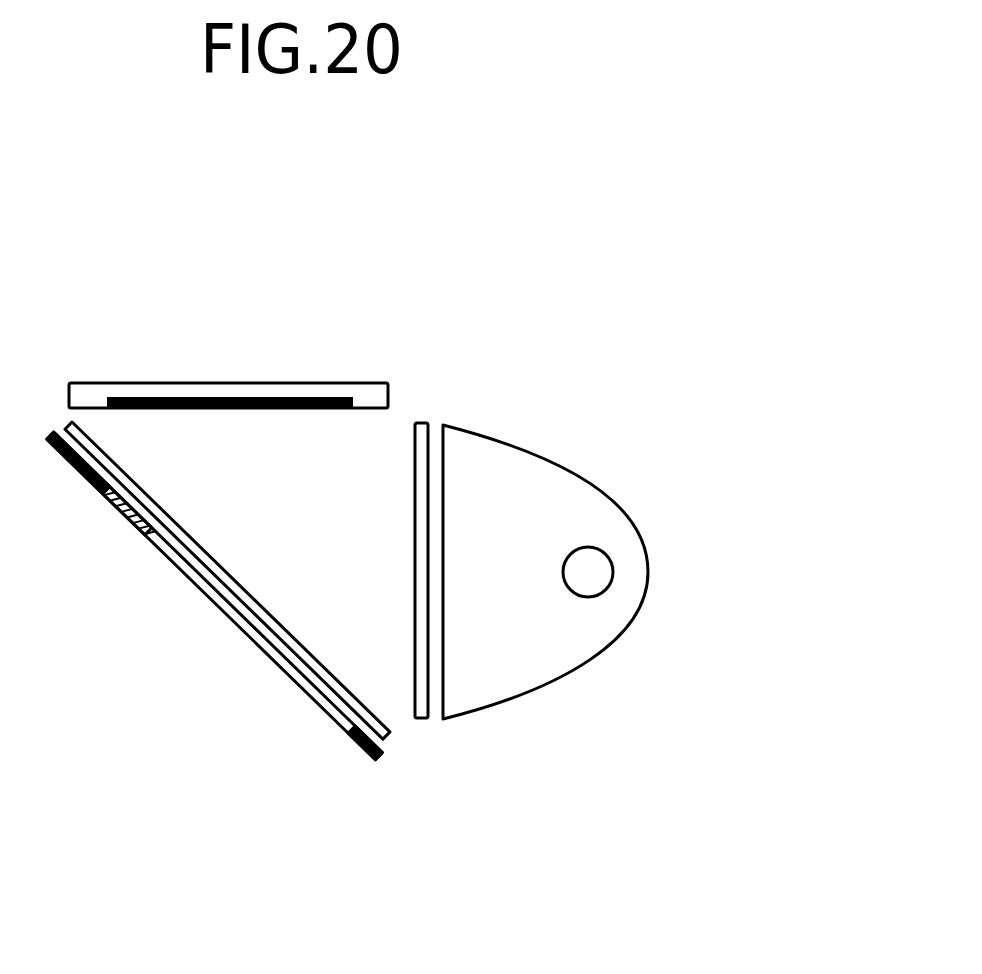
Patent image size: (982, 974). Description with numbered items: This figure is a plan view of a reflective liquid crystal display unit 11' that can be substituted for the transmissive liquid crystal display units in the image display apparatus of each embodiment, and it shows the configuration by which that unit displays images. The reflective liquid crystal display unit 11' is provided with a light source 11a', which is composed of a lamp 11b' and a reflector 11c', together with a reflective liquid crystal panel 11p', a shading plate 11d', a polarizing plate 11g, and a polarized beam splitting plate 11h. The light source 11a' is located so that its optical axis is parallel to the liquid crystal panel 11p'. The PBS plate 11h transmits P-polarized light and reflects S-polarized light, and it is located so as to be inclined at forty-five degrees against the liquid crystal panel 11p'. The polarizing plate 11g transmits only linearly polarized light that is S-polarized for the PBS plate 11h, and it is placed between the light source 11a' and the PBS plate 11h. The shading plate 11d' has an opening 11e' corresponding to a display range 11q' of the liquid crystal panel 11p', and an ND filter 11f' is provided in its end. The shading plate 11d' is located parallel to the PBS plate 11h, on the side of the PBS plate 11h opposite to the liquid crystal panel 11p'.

The reflective liquid crystal display unit 11' is at (460, 605).
The light source 11a' is at (665, 572).
The lamp 11b' is at (671, 567).
The reflector 11c' is at (615, 572).
The shading plate 11d' is at (351, 788).
The opening 11e' is at (215, 596).
The ND filter 11f' is at (94, 521).
The polarizing plate 11g is at (421, 423).
The polarized beam splitting (PBS) plate 11h is at (391, 740).
The reflective liquid crystal panel 11p' is at (252, 349).
The display range 11q' is at (230, 344).